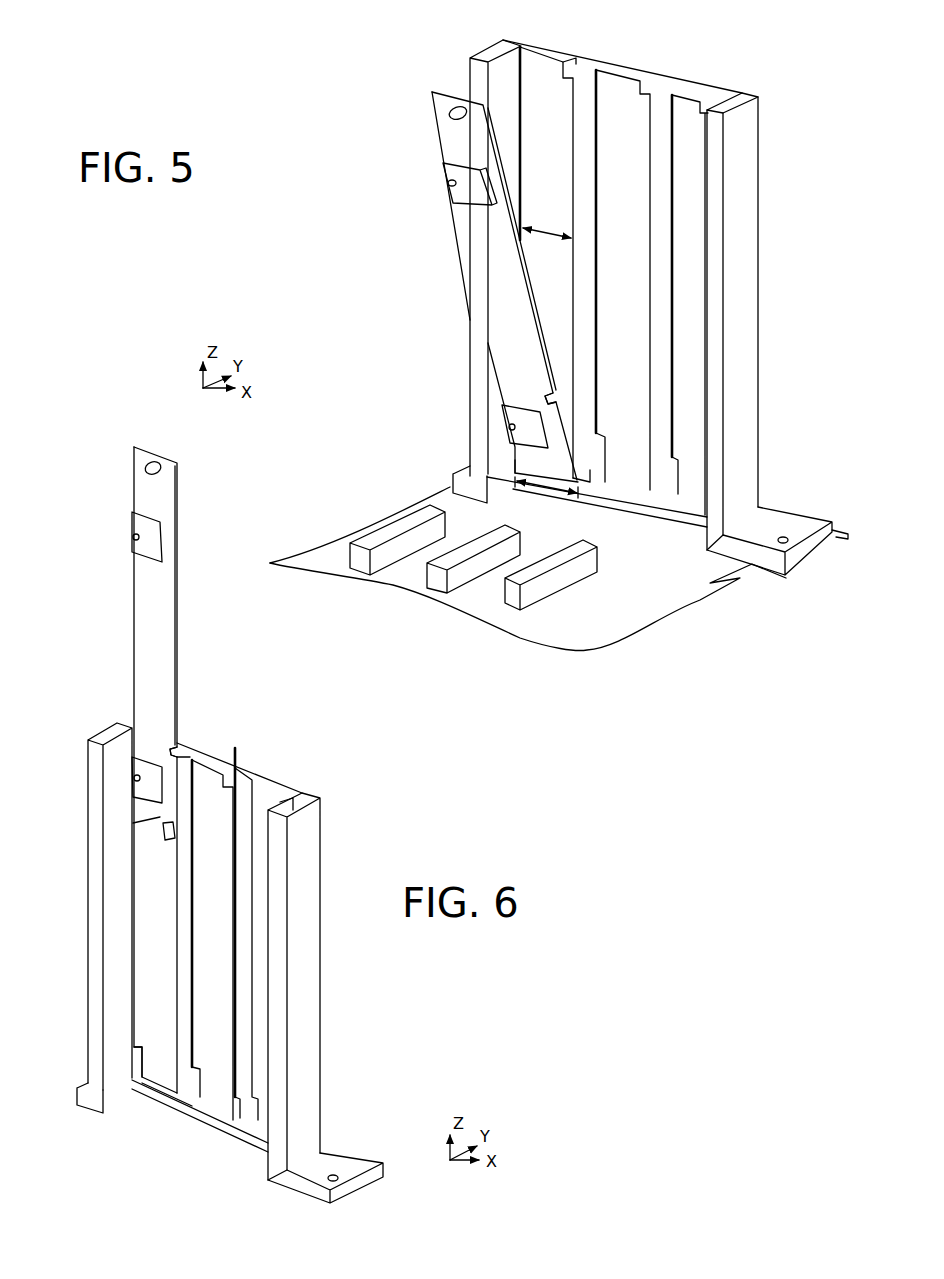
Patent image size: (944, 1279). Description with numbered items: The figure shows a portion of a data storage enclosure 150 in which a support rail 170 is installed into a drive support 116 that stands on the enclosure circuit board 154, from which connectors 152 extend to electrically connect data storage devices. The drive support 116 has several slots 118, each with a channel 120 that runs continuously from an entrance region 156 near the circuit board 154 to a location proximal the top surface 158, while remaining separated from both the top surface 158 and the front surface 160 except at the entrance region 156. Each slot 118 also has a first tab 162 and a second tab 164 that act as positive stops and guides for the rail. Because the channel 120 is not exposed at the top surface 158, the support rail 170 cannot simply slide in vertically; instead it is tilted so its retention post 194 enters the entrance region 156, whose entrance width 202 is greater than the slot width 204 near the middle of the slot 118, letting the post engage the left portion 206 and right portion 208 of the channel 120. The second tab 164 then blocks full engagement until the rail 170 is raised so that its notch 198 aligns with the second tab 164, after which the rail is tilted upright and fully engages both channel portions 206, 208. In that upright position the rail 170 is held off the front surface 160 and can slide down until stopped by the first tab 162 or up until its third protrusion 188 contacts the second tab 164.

In FIG. 5, the data storage enclosure 150 is at (394, 67).
In FIG. 6, the data storage enclosure 150 is at (370, 752).
In FIG. 5, the drive support 116 is at (761, 222).
In FIG. 6, the drive support 116 is at (322, 1042).
In FIG. 5, the slot 118 is at (546, 69).
In FIG. 6, the slot 118 is at (263, 795).
In FIG. 5, the top surface 158 is at (748, 97).
In FIG. 5, the second tab 164 is at (579, 78).
In FIG. 6, the second tab 164 is at (180, 758).
In FIG. 5, the left portion of the channel 206 is at (524, 97).
In FIG. 5, the right portion of the channel 208 is at (571, 203).
In FIG. 5, the slot width 204 is at (547, 242).
In FIG. 5, the support rail 170 is at (458, 212).
In FIG. 6, the support rail 170 is at (181, 616).
In FIG. 5, the notch 198 is at (561, 398).
In FIG. 6, the notch 198 is at (171, 745).
In FIG. 5, the retention post 194 is at (512, 462).
In FIG. 5, the entrance region 156 is at (581, 471).
In FIG. 6, the entrance region 156 is at (148, 1096).
In FIG. 5, the entrance width 202 is at (546, 501).
In FIG. 5, the enclosure circuit board 154 is at (684, 582).
In FIG. 5, the connector 152 is at (553, 590).
In FIG. 6, the third protrusion 188 is at (167, 841).
In FIG. 6, the front surface 160 is at (188, 892).
In FIG. 6, the first tab 162 is at (140, 1041).
In FIG. 6, the channel 120 is at (200, 988).